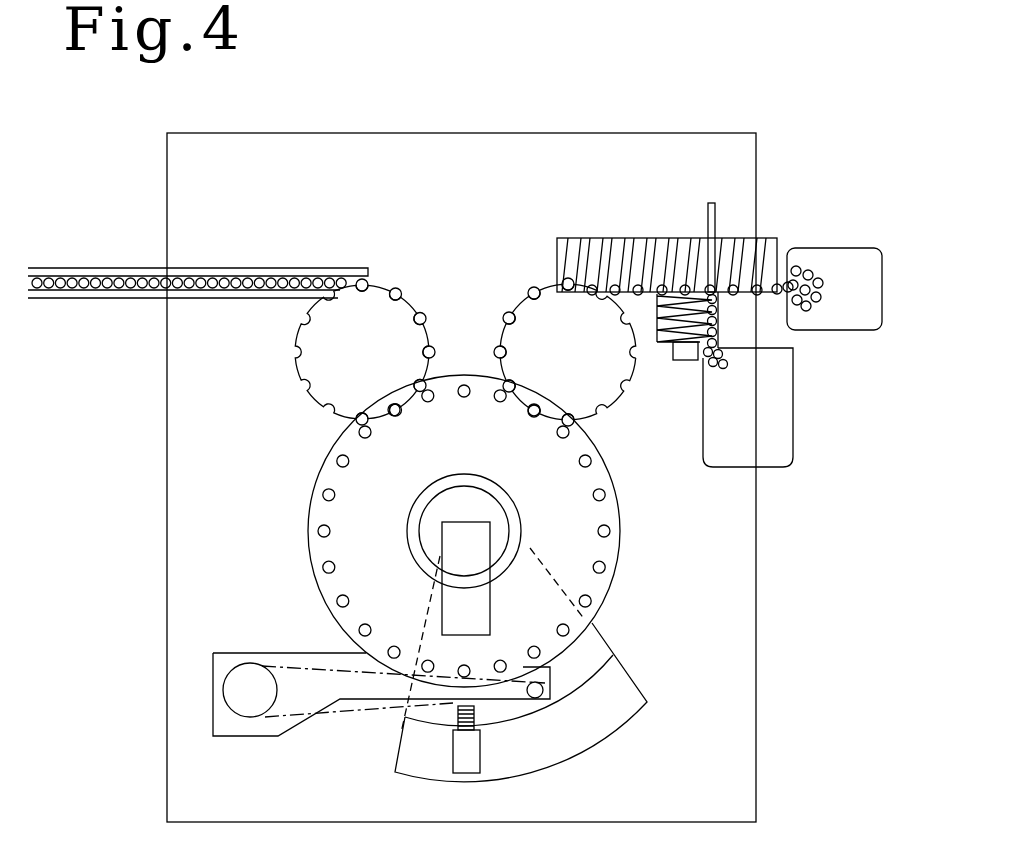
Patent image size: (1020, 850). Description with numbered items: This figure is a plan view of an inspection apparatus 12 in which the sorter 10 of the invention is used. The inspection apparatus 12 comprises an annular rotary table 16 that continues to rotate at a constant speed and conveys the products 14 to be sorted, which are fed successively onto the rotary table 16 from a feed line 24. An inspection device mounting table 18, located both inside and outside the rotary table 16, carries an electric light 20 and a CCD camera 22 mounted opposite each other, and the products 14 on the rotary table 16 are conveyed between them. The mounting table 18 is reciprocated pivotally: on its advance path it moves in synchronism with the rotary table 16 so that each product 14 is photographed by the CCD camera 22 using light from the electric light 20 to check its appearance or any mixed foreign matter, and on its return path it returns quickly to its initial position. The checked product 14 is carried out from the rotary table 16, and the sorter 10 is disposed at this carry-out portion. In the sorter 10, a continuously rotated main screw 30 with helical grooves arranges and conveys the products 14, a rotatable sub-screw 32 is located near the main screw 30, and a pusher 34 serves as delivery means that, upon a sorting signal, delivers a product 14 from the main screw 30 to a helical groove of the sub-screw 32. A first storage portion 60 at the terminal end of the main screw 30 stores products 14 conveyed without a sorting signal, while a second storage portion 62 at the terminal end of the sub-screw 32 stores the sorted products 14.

The sorter 10 is at (671, 205).
The inspection apparatus 12 is at (158, 466).
The products 14 is at (208, 294).
The rotary table 16 is at (318, 512).
The inspection device mounting table 18 is at (490, 530).
The electric light 20 is at (483, 603).
The CCD camera 22 is at (472, 757).
The feed line 24 is at (313, 258).
The main screw 30 is at (612, 226).
The sub-screw 32 is at (665, 358).
The pusher 34 is at (717, 232).
The first storage portion 60 is at (842, 248).
The second storage portion 62 is at (797, 403).